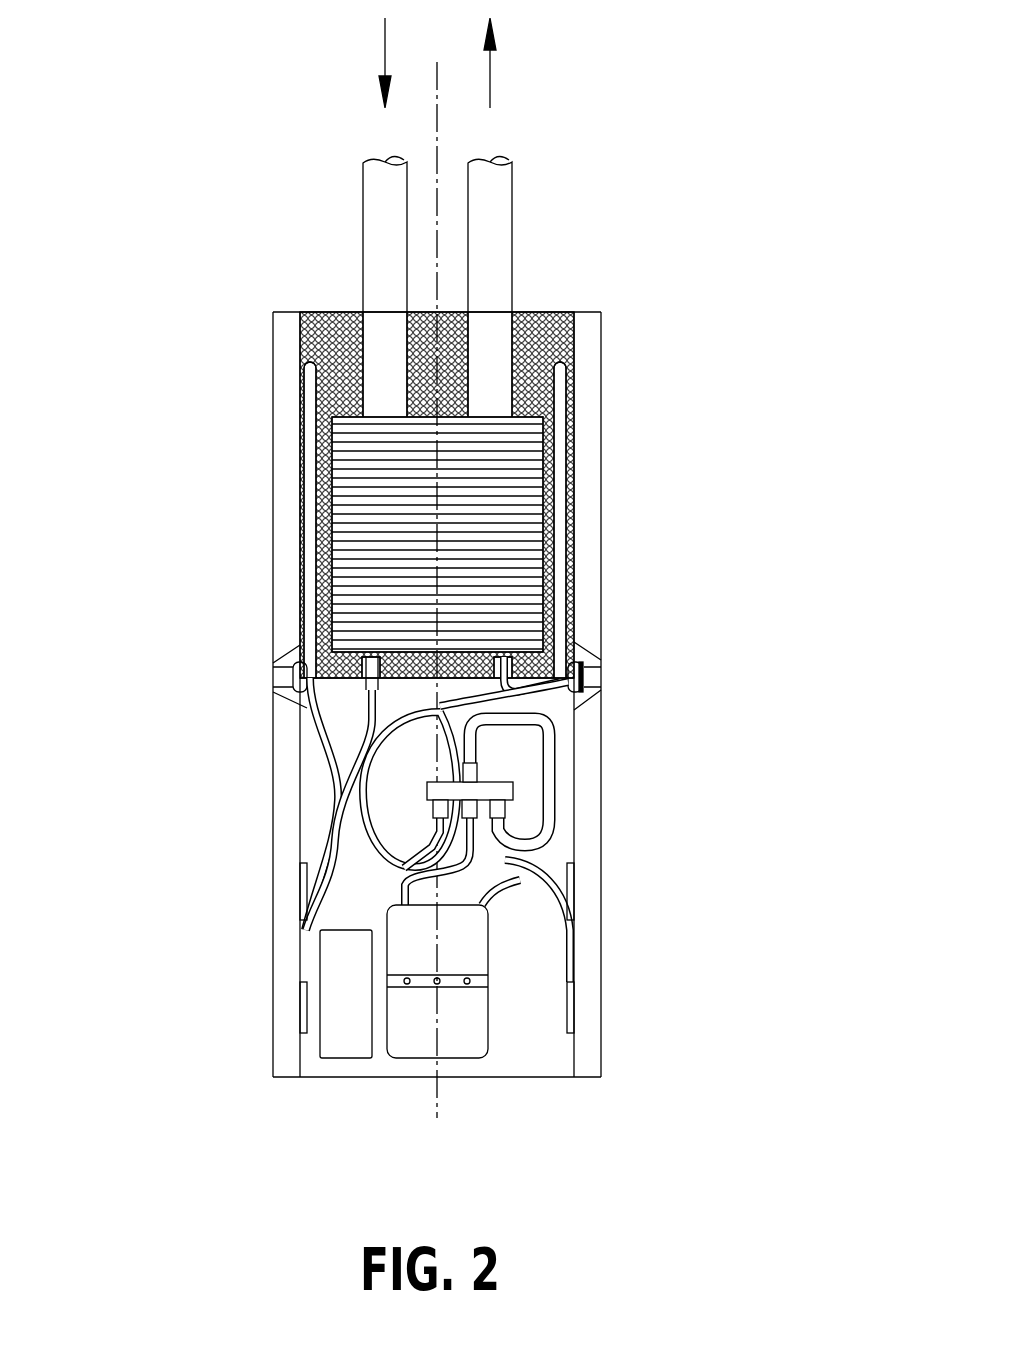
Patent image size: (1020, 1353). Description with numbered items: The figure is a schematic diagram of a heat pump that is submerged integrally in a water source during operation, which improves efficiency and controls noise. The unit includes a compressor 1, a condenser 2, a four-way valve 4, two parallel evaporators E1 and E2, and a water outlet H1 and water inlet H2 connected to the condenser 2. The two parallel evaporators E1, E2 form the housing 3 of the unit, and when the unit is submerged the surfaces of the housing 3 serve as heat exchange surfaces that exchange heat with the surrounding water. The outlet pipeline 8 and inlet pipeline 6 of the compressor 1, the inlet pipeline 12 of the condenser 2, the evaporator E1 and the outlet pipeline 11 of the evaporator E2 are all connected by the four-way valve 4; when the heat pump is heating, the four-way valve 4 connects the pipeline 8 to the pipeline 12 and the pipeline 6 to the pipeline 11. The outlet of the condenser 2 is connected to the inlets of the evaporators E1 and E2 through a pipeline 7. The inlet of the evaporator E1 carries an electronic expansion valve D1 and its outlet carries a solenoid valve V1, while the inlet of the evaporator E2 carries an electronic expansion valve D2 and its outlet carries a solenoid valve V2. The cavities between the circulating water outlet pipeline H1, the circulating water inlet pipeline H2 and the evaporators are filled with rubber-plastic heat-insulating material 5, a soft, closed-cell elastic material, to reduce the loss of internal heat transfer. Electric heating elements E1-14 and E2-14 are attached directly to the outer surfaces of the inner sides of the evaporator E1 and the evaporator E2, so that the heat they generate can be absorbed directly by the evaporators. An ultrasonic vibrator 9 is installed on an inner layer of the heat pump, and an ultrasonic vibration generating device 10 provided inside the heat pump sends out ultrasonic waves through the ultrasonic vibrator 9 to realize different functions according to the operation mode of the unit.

The compressor 1 is at (435, 1025).
The condenser 2 is at (503, 462).
The housing 3 is at (490, 1077).
The four-way valve 4 is at (468, 782).
The rubber-plastic heat-insulating material 5 is at (550, 548).
The inlet pipeline 6 is at (462, 863).
The pipeline 7 is at (372, 677).
The outlet pipeline 8 is at (547, 823).
The ultrasonic vibrator 9 is at (590, 675).
The ultrasonic vibration generating device 10 is at (345, 1048).
The outlet pipeline 11 is at (432, 847).
The inlet pipeline 12 is at (550, 712).
The water outlet H1 is at (488, 372).
The water inlet H2 is at (385, 372).
The solenoid valve V1 is at (560, 460).
The solenoid valve V2 is at (318, 422).
The evaporator E1 is at (593, 730).
The evaporator E2 is at (292, 512).
The electronic expansion valve D1 is at (525, 882).
The electronic expansion valve D2 is at (330, 860).
The electric heating element E1-14 is at (574, 997).
The electric heating element E2-14 is at (300, 985).